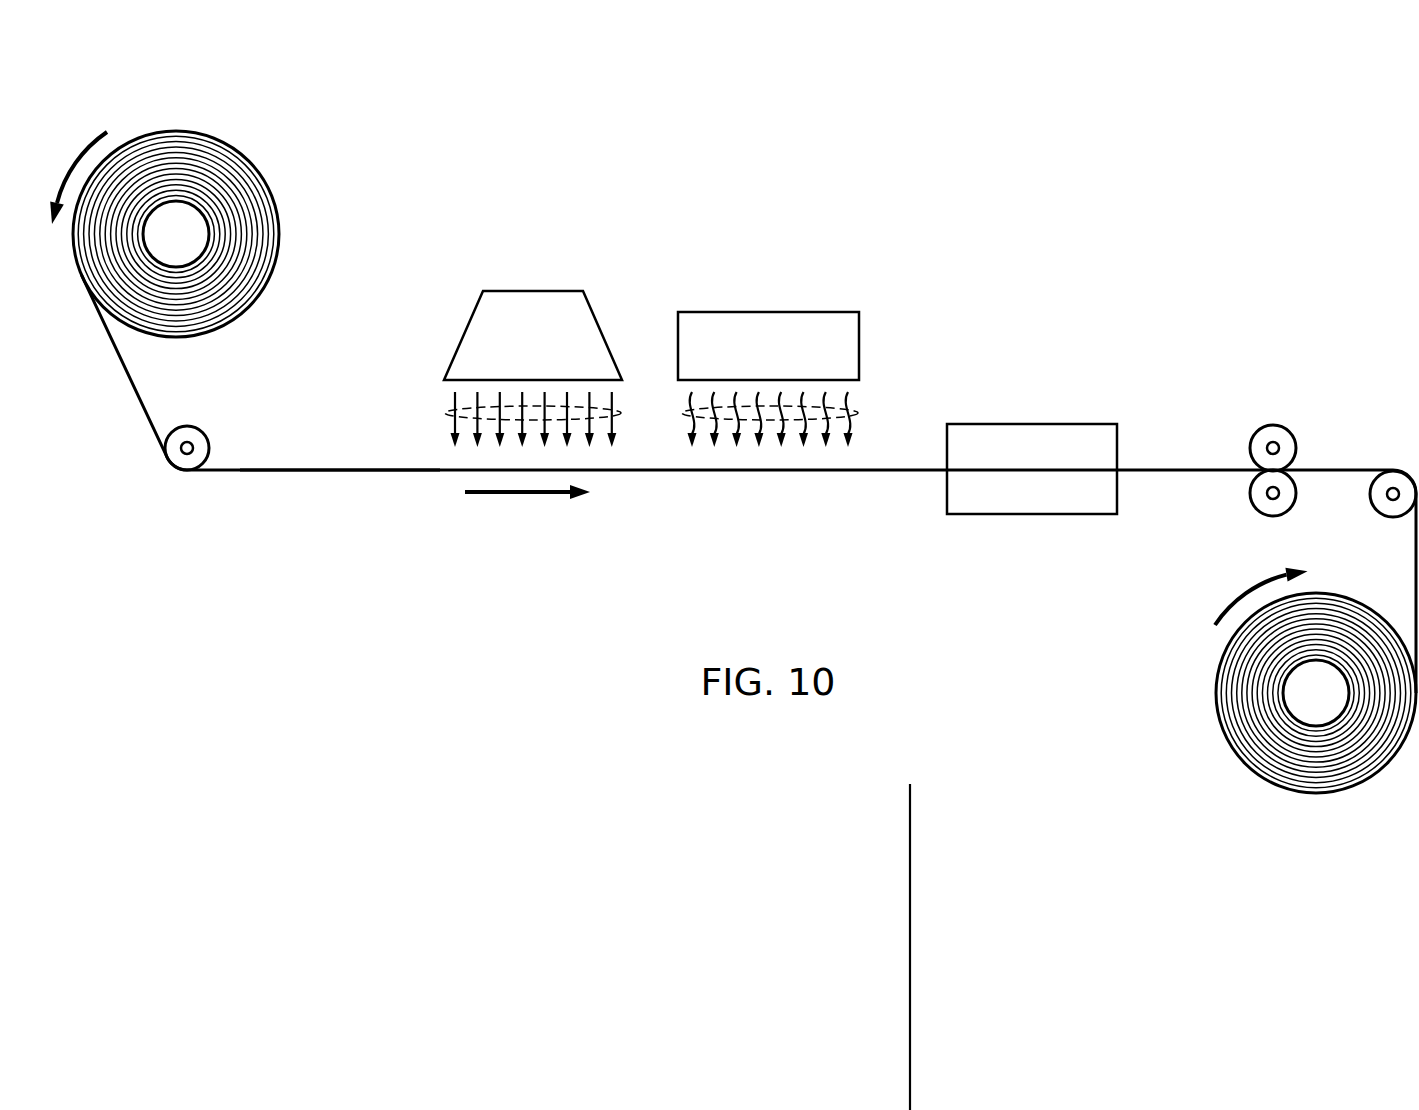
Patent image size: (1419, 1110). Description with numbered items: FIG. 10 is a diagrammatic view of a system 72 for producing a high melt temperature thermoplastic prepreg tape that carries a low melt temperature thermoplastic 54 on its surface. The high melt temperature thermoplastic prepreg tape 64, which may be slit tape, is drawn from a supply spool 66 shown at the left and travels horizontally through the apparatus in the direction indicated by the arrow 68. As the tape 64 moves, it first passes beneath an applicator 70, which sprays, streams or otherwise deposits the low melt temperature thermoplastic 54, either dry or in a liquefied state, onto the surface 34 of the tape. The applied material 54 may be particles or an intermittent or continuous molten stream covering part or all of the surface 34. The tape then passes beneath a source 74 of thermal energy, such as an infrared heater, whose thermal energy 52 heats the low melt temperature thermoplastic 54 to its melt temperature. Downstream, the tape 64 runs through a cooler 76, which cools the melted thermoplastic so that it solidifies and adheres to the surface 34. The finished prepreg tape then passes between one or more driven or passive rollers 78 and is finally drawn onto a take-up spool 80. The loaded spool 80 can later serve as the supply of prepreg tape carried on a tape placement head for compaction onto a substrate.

The surface 34 is at (340, 452).
The thermal energy 52 is at (855, 413).
The low melt temperature thermoplastic 54 is at (446, 414).
The high melt temperature thermoplastic prepreg tape 64 is at (125, 375).
The supply spool 66 is at (175, 131).
The web travel direction 68 is at (515, 495).
The applicator 70 is at (533, 289).
The system 72 is at (1132, 182).
The source of thermal energy 74 is at (768, 311).
The cooler 76 is at (1032, 422).
The rollers 78 is at (1271, 424).
The take-up spool 80 is at (1318, 795).